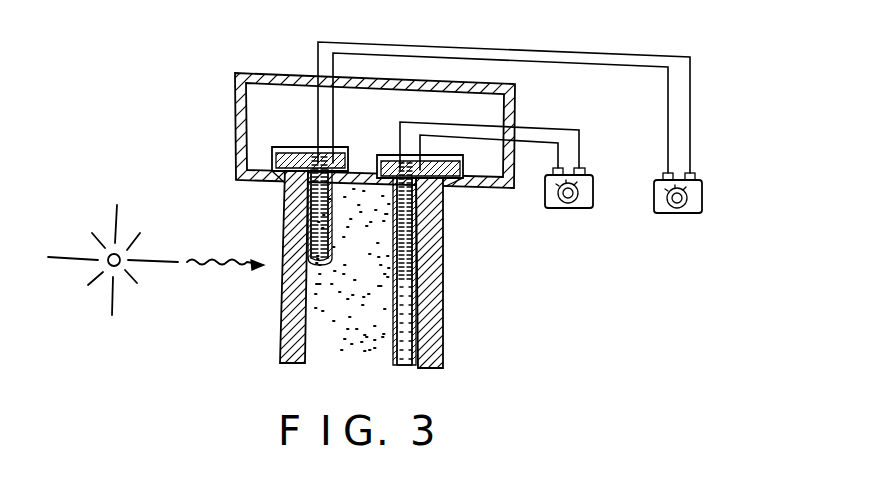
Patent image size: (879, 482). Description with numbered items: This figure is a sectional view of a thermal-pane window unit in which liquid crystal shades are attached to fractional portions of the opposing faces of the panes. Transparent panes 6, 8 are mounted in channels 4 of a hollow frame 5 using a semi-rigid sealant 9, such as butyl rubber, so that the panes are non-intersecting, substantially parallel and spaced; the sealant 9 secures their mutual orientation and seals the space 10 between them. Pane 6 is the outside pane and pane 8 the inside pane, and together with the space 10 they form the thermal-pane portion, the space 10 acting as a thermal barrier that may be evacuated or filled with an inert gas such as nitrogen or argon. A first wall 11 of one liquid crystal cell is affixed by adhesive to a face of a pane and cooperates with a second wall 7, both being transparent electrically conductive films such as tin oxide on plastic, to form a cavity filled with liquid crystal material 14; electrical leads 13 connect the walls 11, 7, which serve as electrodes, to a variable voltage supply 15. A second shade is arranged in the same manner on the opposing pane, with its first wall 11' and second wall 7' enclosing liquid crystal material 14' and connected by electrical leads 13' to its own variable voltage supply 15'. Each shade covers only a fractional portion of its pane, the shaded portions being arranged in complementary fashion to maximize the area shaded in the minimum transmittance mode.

The channel 4 is at (295, 147).
The frame 5 is at (235, 74).
The transparent pane 6 is at (283, 318).
The second wall 7 is at (386, 271).
The second wall 7' is at (338, 217).
The transparent pane 8 is at (443, 315).
The sealant 9 is at (285, 183).
The space 10 is at (330, 342).
The first wall 11 is at (388, 287).
The first wall 11' is at (336, 236).
The electrical leads 13 is at (495, 128).
The electrical leads 13' is at (504, 90).
The liquid crystal material 14 is at (441, 261).
The liquid crystal material 14' is at (343, 207).
The variable voltage supply 15 is at (581, 210).
The variable voltage supply 15' is at (694, 214).